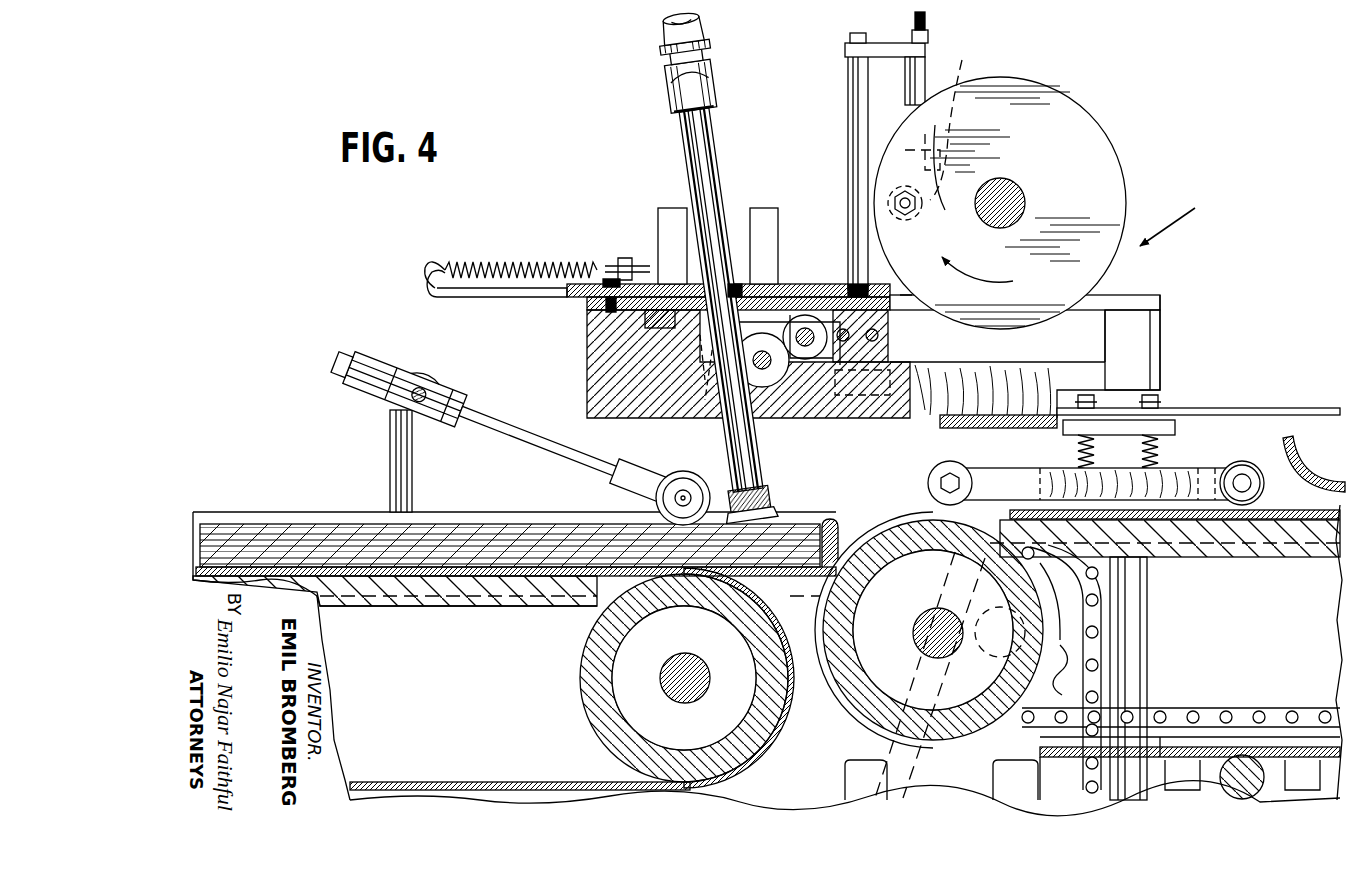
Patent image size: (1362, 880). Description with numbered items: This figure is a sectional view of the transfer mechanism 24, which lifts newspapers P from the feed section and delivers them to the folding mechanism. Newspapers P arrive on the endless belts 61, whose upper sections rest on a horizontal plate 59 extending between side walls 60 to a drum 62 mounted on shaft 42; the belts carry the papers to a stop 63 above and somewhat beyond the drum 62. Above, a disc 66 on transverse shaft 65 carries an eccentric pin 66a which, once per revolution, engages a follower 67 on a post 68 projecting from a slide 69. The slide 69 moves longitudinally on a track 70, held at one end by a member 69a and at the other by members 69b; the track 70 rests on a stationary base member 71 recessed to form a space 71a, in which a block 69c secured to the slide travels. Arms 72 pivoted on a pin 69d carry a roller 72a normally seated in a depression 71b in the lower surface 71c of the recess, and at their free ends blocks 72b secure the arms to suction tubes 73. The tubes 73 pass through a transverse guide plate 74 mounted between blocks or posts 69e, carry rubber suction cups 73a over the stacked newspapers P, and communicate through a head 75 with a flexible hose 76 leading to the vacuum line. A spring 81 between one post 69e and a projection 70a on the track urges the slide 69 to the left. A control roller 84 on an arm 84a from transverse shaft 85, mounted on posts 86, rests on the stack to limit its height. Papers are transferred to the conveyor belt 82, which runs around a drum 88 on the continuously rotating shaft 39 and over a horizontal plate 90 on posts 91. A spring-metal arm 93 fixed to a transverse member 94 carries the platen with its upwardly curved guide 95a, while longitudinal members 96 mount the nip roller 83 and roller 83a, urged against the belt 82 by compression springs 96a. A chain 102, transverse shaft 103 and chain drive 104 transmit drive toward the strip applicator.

The transfer mechanism 24 is at (1179, 214).
The continuously rotating shaft 39 is at (918, 630).
The shaft 42 is at (672, 680).
The horizontal plate 59 is at (380, 606).
The side walls 60 is at (514, 519).
The endless belts 61 is at (468, 782).
The drum 62 is at (655, 678).
The stop 63 is at (833, 520).
The transverse shaft 65 is at (1022, 188).
The disc 66 is at (1003, 182).
The eccentric pin 66a is at (906, 218).
The follower 67 is at (963, 70).
The post 68 is at (848, 105).
The slide 69 is at (820, 290).
The member 69a is at (655, 325).
The members 69b is at (880, 380).
The block 69c is at (880, 318).
The pin 69d is at (808, 348).
The blocks or posts 69e is at (660, 218).
The track 70 is at (585, 310).
The projection 70a is at (510, 297).
The stationary base member 71 is at (1057, 377).
The space 71a is at (1108, 328).
The depression 71b is at (815, 405).
The lower surface 71c is at (900, 395).
The arms 72 is at (778, 335).
The roller or follower 72a is at (800, 348).
The blocks 72b is at (745, 372).
The suction tubes 73 is at (713, 267).
The rubber suction cups 73a is at (782, 507).
The transverse guide plate 74 is at (738, 284).
The head 75 is at (707, 80).
The flexible hose 76 is at (663, 40).
The spring 81 is at (515, 262).
The conveyor belt 82 is at (923, 655).
The nip roller 83 is at (1077, 463).
The roller 83a is at (1245, 462).
The roller 84 is at (665, 475).
The arm 84a is at (508, 453).
The transverse shaft 85 is at (385, 412).
The posts 86 is at (390, 462).
The drum 88 is at (946, 642).
The horizontal plate 90 is at (1272, 535).
The posts 91 is at (1140, 650).
The arm 93 is at (1277, 408).
The transverse member 94 is at (980, 428).
The guide 95a is at (1312, 480).
The longitudinal members 96 is at (1137, 446).
The compression springs 96a is at (1135, 455).
The chain 102 is at (1098, 604).
The transverse shaft 103 is at (985, 620).
The chain drive 104 is at (1248, 714).
The newspapers P is at (486, 540).